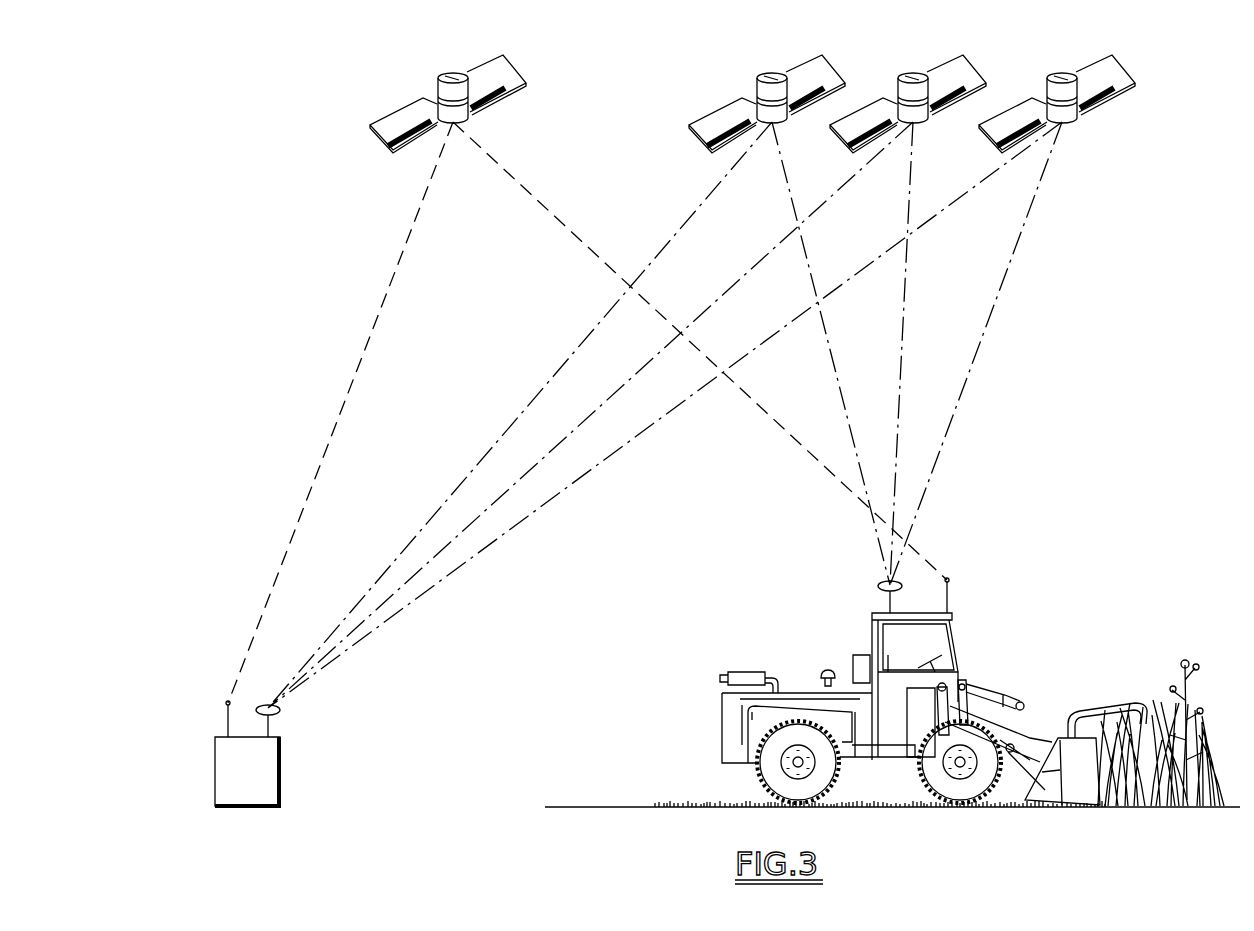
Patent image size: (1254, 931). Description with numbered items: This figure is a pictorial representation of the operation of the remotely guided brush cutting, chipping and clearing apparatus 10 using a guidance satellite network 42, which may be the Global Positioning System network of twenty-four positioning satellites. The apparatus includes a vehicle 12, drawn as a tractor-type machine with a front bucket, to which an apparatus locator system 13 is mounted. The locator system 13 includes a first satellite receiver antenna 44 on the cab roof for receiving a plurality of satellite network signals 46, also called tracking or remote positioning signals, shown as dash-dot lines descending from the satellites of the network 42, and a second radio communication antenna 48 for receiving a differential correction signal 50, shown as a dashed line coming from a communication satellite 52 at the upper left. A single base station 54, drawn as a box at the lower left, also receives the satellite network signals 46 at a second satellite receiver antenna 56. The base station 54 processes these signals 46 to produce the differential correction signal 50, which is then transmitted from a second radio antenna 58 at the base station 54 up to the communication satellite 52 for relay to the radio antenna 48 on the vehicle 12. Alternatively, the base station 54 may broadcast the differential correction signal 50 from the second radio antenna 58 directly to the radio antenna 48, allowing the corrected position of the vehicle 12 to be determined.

The remotely guided brush cutting, chipping and clearing apparatus 10 is at (848, 640).
The vehicle 12 is at (761, 734).
The apparatus locator system 13 is at (933, 604).
The guidance satellite network 42 is at (908, 52).
The first satellite receiver antenna 44 is at (879, 584).
The satellite network signals 46 is at (542, 508).
The second radio communication antenna 48 is at (950, 580).
The differential correction signal 50 is at (555, 216).
The communication satellite 52 is at (396, 92).
The base station 54 is at (268, 790).
The second satellite receiver antenna 56 is at (281, 712).
The second radio antenna 58 is at (226, 706).